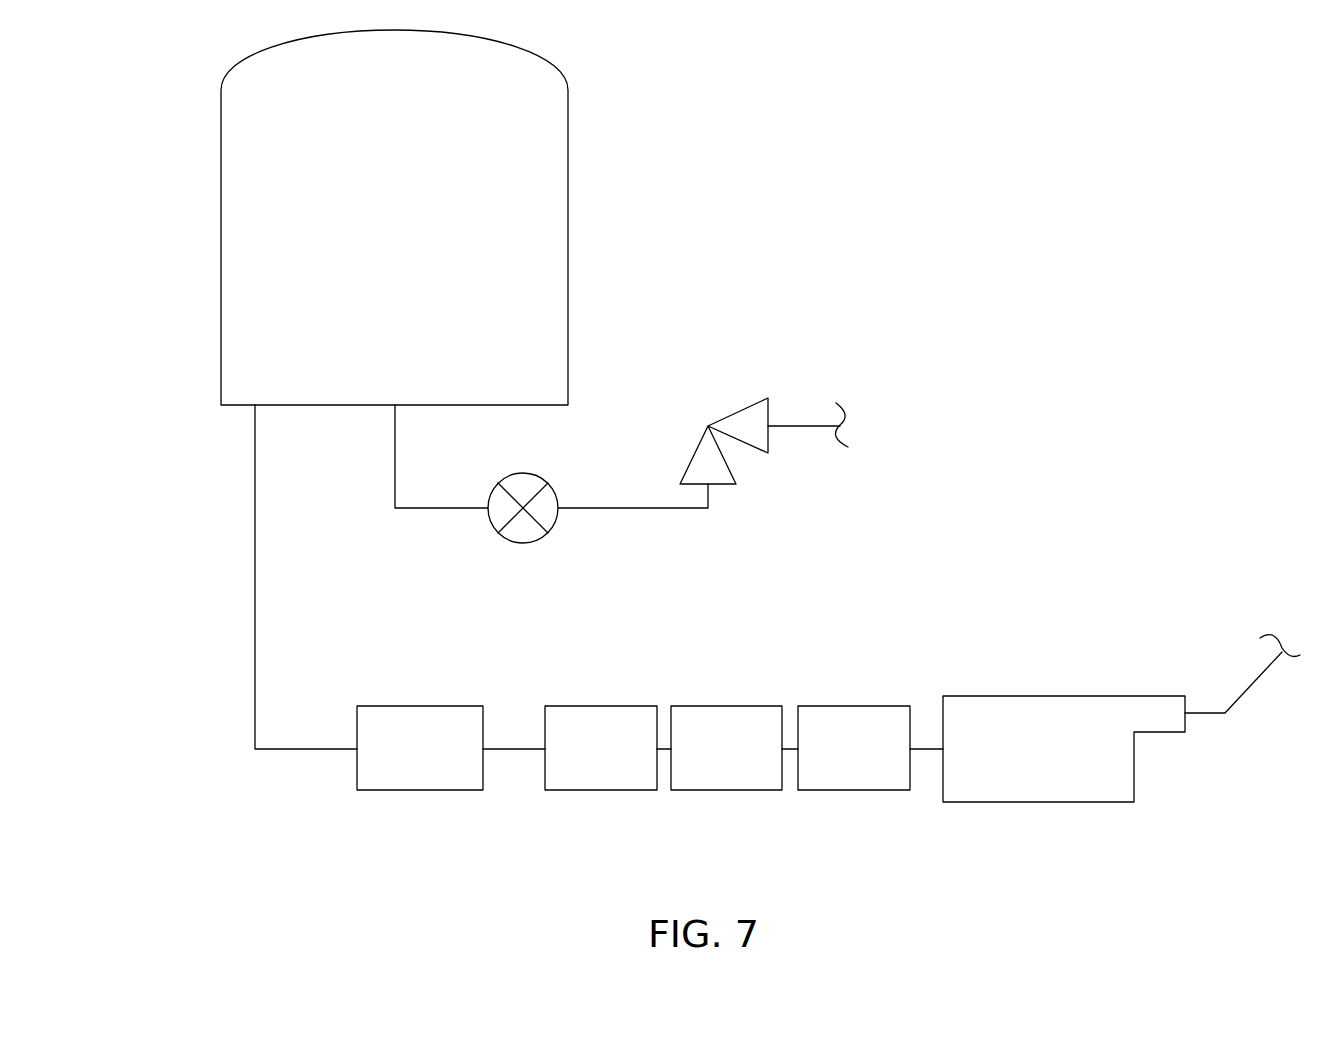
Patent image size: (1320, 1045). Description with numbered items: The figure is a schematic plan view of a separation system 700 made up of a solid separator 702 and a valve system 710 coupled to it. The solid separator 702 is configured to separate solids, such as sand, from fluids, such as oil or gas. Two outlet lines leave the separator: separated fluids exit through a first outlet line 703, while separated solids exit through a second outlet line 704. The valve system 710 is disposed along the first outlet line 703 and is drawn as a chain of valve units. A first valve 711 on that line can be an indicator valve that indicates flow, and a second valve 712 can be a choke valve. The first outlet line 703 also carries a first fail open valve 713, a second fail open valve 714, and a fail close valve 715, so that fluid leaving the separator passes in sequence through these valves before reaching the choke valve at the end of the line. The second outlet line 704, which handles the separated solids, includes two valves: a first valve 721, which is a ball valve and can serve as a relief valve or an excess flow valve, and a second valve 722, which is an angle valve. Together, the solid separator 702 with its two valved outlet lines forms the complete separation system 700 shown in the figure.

The separation system 700 is at (920, 101).
The solid separator 702 is at (568, 133).
The first outlet line 703 is at (255, 471).
The second outlet line 704 is at (395, 448).
The valve system 710 is at (311, 799).
The first valve 711 is at (383, 790).
The second valve 712 is at (1017, 695).
The first fail open valve 713 is at (596, 792).
The second fail open valve 714 is at (730, 792).
The fail close valve 715 is at (876, 792).
The first valve 721 is at (540, 478).
The second valve 722 is at (737, 408).